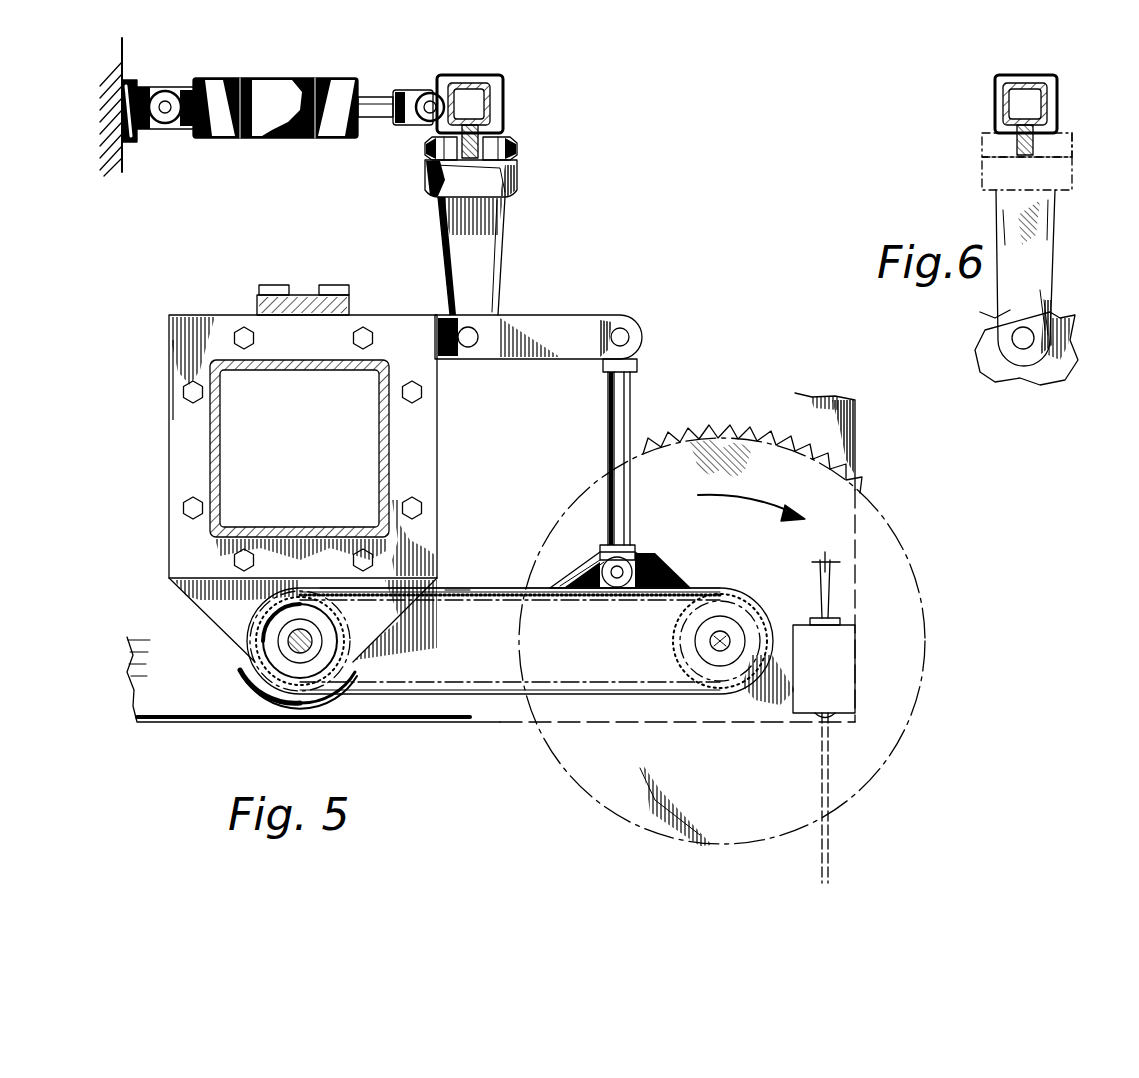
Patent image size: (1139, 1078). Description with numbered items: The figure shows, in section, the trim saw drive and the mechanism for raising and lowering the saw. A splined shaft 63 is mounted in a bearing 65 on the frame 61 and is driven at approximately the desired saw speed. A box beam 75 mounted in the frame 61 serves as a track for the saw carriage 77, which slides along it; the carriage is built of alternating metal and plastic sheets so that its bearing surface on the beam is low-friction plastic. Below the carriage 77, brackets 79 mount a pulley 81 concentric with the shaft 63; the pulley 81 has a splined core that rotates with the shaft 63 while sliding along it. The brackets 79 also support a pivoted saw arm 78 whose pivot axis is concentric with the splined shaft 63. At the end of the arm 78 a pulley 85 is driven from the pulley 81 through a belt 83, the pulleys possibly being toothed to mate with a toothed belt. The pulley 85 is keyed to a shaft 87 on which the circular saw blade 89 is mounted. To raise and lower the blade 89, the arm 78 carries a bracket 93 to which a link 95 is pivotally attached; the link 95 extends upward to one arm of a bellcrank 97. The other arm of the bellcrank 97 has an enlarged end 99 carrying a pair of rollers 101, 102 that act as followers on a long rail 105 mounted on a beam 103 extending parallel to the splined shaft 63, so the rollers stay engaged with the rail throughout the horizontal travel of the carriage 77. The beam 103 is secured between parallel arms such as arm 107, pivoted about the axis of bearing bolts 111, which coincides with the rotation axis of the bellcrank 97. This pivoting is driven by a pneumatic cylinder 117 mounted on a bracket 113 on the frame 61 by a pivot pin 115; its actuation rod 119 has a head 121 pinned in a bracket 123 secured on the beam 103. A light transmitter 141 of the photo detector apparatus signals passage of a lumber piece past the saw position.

In FIG. 5, the frame 61 is at (124, 52).
In FIG. 6, the frame 61 is at (980, 372).
In FIG. 5, the splined shaft 63 is at (270, 642).
In FIG. 5, the bearing 65 is at (258, 683).
In FIG. 5, the box beam 75 is at (220, 450).
In FIG. 5, the saw carriage 77 is at (169, 480).
In FIG. 5, the saw arm 78 is at (452, 588).
In FIG. 5, the brackets 79 is at (205, 612).
In FIG. 5, the pulley 81 is at (320, 642).
In FIG. 5, the belt 83 is at (405, 690).
In FIG. 5, the pulley 85 is at (732, 688).
In FIG. 5, the shaft 87 is at (705, 644).
In FIG. 5, the circular saw blade 89 is at (862, 492).
In FIG. 5, the bracket 93 is at (637, 570).
In FIG. 5, the link 95 is at (608, 402).
In FIG. 5, the bellcrank 97 is at (545, 315).
In FIG. 5, the enlarged end 99 is at (517, 178).
In FIG. 6, the enlarged end 99 is at (984, 180).
In FIG. 5, the roller 101 is at (428, 150).
In FIG. 6, the roller 101 is at (984, 135).
In FIG. 5, the roller 102 is at (517, 140).
In FIG. 6, the roller 102 is at (1070, 135).
In FIG. 5, the beam 103 is at (500, 98).
In FIG. 6, the beam 103 is at (997, 90).
In FIG. 5, the rail 105 is at (490, 130).
In FIG. 6, the arm 107 is at (998, 298).
In FIG. 6, the bearing bolts 111 is at (1012, 338).
In FIG. 5, the bracket 113 is at (150, 130).
In FIG. 5, the pivot pin 115 is at (167, 100).
In FIG. 5, the pneumatic cylinder 117 is at (250, 140).
In FIG. 5, the actuation rod 119 is at (383, 97).
In FIG. 5, the head 121 is at (402, 97).
In FIG. 5, the bracket 123 is at (433, 93).
In FIG. 5, the light transmitter 141 is at (855, 676).